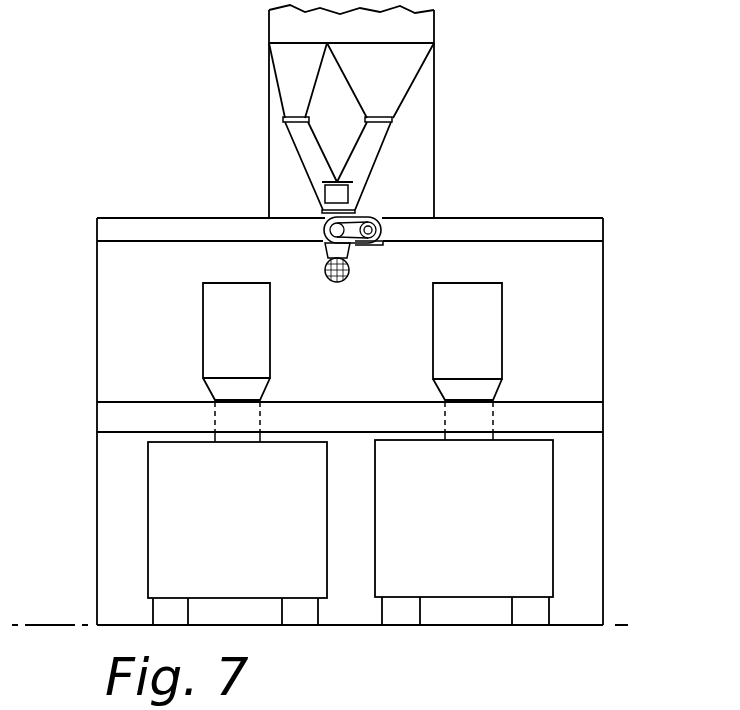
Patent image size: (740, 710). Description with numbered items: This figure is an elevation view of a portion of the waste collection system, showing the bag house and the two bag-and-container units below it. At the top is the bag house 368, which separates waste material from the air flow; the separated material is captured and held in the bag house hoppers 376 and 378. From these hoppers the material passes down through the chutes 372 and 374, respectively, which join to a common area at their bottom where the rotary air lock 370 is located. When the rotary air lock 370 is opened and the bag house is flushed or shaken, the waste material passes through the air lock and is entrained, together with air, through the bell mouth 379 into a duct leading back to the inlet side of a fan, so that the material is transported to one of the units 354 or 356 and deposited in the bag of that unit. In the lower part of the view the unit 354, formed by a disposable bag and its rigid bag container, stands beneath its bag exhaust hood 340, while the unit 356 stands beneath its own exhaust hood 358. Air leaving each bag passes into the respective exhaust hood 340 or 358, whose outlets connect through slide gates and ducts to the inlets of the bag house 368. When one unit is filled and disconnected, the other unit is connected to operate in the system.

The bag house 368 is at (422, 32).
The bag house hopper 378 is at (287, 75).
The bag house hopper 376 is at (402, 77).
The chute 374 is at (302, 145).
The chute 372 is at (370, 147).
The rotary air lock 370 is at (353, 215).
The bell mouth 379 is at (348, 272).
The exhaust hood 358 is at (210, 330).
The bag exhaust hood 340 is at (495, 313).
The unit 356 is at (157, 525).
The unit 354 is at (543, 520).